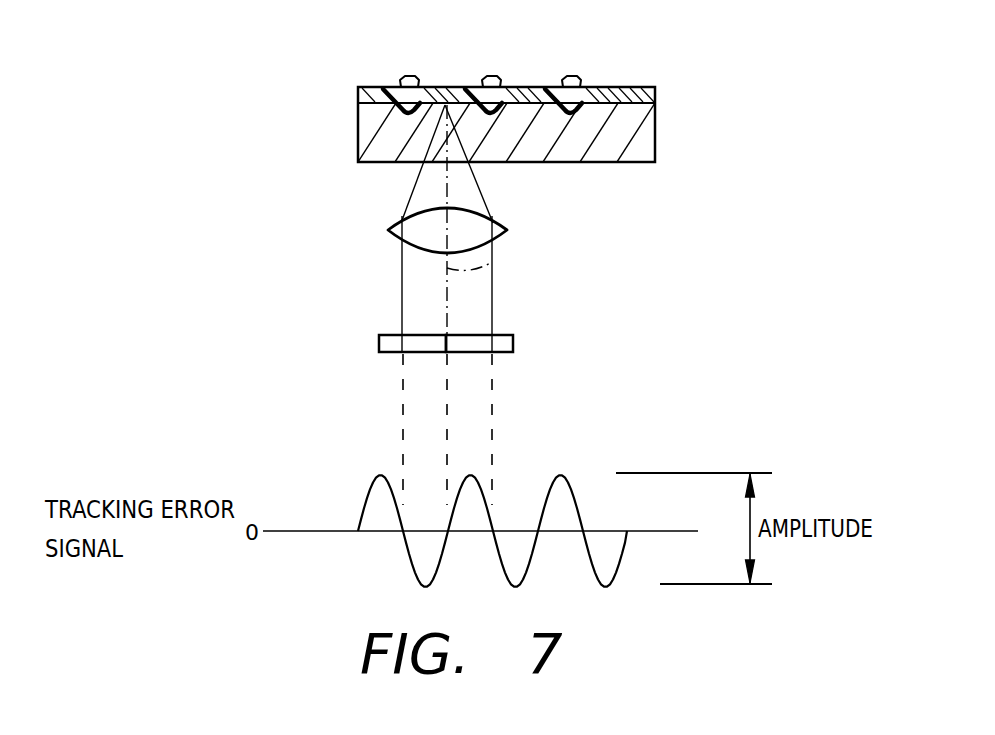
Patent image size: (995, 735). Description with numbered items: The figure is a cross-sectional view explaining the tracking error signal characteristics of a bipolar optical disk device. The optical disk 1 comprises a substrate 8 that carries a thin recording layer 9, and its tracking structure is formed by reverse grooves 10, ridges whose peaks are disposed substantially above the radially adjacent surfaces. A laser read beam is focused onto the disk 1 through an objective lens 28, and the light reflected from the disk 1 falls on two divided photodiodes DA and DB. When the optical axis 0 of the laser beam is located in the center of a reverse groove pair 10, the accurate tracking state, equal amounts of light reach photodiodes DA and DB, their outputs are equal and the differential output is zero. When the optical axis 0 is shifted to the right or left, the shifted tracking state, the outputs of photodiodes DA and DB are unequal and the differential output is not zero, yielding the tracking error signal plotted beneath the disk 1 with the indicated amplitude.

The optical disk 1 is at (672, 74).
The substrate 8 is at (608, 143).
The recording layer 9 is at (385, 93).
The reverse grooves 10 is at (500, 77).
The objective lens 28 is at (502, 224).
The optical axis 0 is at (489, 262).
The photodiode DA is at (388, 345).
The photodiode DB is at (507, 344).